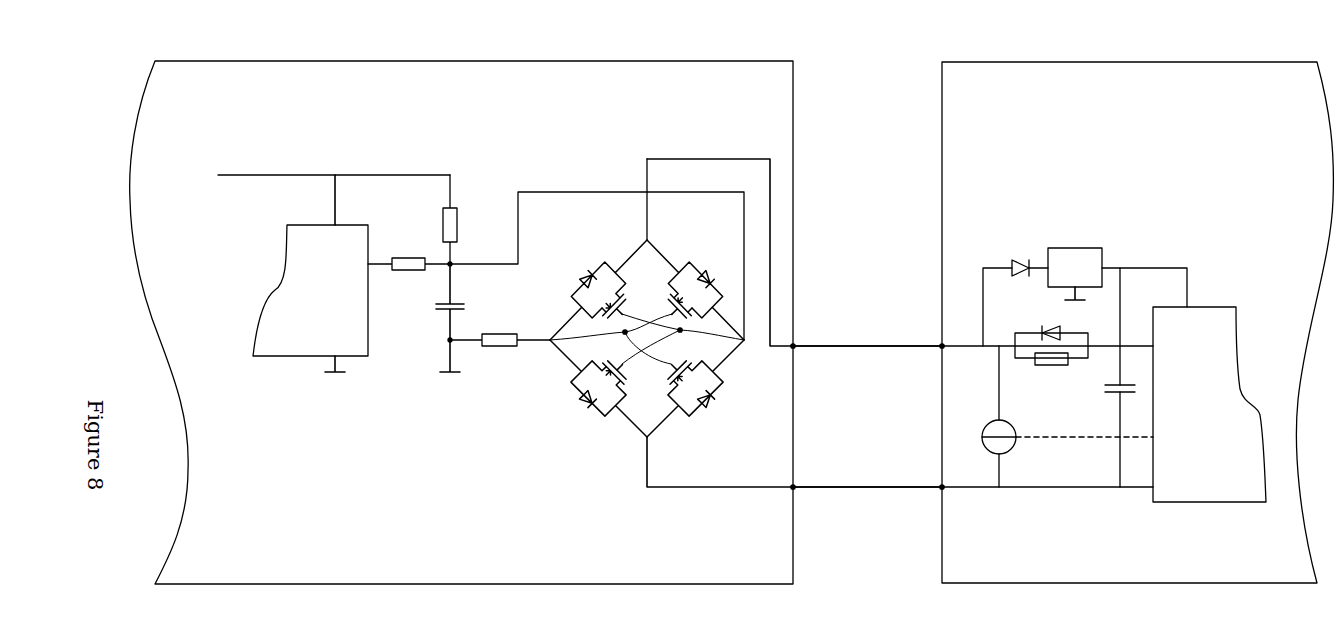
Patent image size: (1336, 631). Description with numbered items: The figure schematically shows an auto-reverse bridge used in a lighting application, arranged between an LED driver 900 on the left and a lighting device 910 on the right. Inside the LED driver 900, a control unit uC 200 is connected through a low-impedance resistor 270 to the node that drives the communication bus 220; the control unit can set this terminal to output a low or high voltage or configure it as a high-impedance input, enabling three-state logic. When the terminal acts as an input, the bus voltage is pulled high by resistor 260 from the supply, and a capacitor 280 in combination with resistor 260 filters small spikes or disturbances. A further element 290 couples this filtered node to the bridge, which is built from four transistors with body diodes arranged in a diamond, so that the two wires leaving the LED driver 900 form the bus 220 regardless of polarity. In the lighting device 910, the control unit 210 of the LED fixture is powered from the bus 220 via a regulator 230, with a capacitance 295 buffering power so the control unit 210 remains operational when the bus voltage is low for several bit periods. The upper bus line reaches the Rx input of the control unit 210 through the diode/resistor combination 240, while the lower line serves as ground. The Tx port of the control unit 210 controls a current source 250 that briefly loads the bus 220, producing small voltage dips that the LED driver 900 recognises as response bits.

The LED driver 900 is at (666, 58).
The lighting device 910 is at (980, 58).
The microcontroller 200 is at (272, 363).
The control unit 210 is at (1188, 512).
The communication bus 220 is at (878, 446).
The regulator 230 is at (1078, 246).
The diode/resistor combination 240 is at (1053, 370).
The current source 250 is at (1008, 420).
The resistor 260 is at (461, 206).
The low-impedance resistor 270 is at (397, 252).
The capacitor 280 is at (430, 311).
The resistor 290 is at (504, 354).
The capacitance 295 is at (1111, 397).